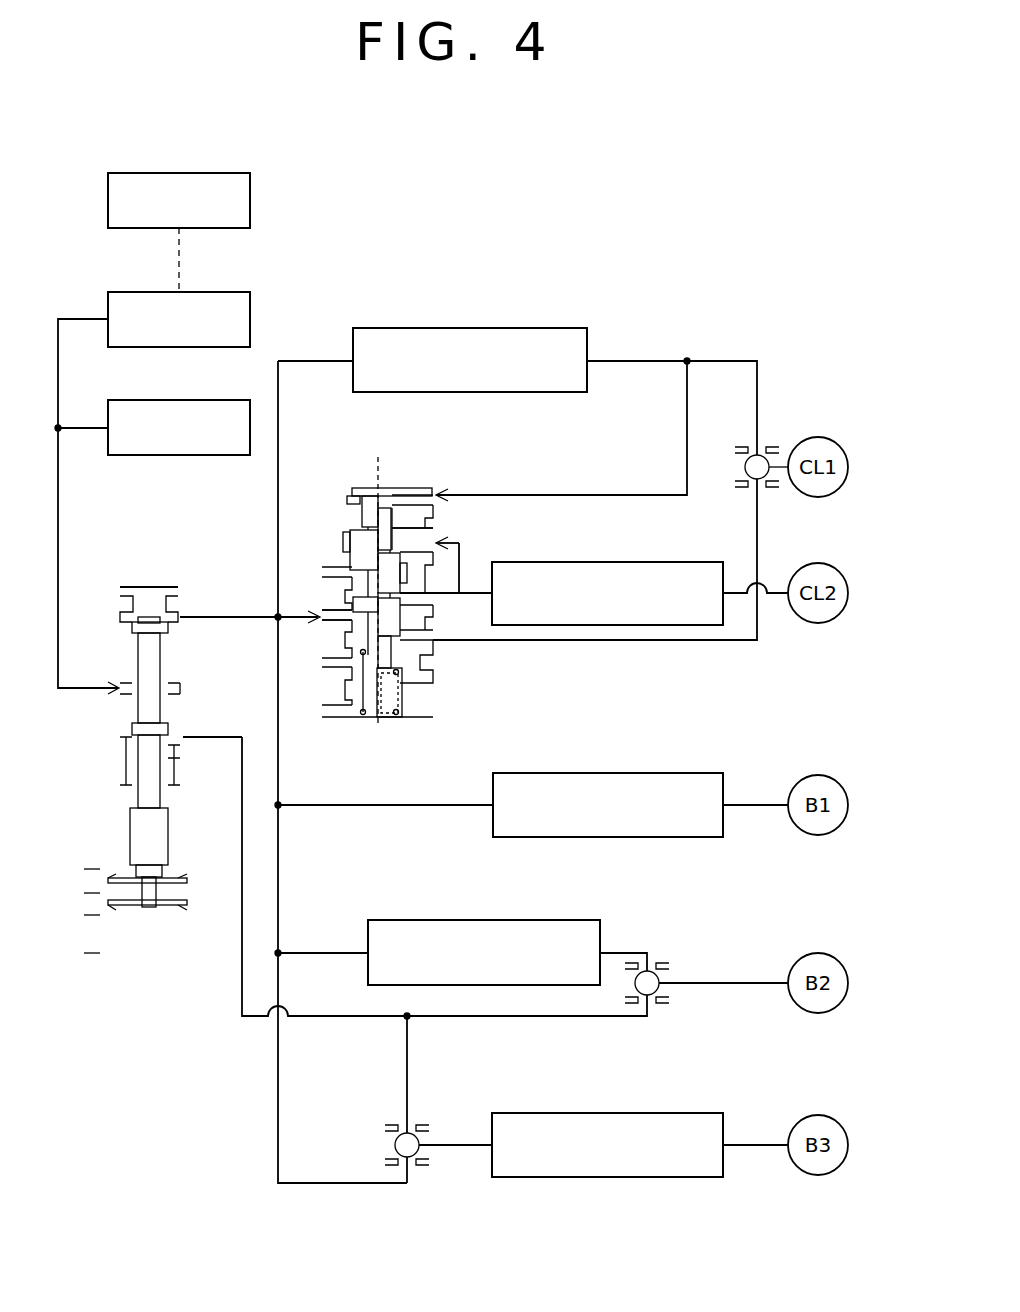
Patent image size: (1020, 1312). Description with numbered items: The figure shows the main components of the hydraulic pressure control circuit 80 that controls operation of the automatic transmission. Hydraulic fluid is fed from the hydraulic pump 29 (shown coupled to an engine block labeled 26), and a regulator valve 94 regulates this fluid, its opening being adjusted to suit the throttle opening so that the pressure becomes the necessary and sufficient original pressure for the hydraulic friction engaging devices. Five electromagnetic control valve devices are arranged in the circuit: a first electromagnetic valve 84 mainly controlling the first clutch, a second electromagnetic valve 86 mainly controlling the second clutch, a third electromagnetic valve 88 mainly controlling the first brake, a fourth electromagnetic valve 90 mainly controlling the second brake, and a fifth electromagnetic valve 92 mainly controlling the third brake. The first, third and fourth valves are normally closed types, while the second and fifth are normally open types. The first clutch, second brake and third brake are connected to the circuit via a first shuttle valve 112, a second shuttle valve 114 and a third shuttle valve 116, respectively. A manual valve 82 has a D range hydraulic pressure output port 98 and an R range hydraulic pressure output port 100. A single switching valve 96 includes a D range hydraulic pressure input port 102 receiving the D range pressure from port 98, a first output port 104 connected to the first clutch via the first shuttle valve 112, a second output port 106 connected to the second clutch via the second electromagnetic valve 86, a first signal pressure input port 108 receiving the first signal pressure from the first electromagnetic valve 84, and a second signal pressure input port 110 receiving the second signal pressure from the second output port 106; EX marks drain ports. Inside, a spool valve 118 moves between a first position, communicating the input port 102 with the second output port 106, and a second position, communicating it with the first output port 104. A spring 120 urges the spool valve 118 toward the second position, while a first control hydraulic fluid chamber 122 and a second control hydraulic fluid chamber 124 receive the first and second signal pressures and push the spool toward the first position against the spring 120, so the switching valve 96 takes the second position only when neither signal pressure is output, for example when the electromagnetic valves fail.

The engine 26 is at (232, 173).
The hydraulic pump 29 is at (232, 292).
The regulator valve 94 is at (170, 400).
The manual valve 82 is at (154, 578).
The D range hydraulic pressure output port 98 is at (180, 624).
The R range hydraulic pressure output port 100 is at (185, 735).
The D range hydraulic pressure input port 102 is at (322, 612).
The hydraulic pressure control circuit 80 is at (440, 283).
The first electromagnetic valve 84 is at (533, 328).
The second electromagnetic valve 86 is at (640, 562).
The third electromagnetic valve 88 is at (645, 773).
The fourth electromagnetic valve 90 is at (525, 920).
The fifth electromagnetic valve 92 is at (645, 1113).
The switching valve 96 is at (398, 459).
The first output port 104 is at (433, 642).
The second output port 106 is at (435, 597).
The first signal pressure input port 108 is at (437, 495).
The second signal pressure input port 110 is at (437, 535).
The first shuttle valve 112 is at (785, 437).
The second shuttle valve 114 is at (668, 952).
The third shuttle valve 116 is at (422, 1115).
The spool valve 118 is at (398, 502).
The spring 120 is at (405, 725).
The first control hydraulic fluid chamber 122 is at (352, 494).
The second control hydraulic fluid chamber 124 is at (348, 548).